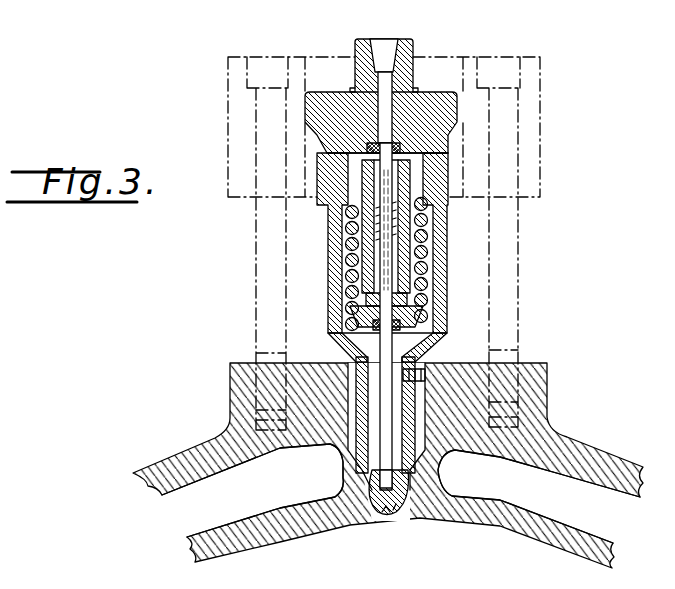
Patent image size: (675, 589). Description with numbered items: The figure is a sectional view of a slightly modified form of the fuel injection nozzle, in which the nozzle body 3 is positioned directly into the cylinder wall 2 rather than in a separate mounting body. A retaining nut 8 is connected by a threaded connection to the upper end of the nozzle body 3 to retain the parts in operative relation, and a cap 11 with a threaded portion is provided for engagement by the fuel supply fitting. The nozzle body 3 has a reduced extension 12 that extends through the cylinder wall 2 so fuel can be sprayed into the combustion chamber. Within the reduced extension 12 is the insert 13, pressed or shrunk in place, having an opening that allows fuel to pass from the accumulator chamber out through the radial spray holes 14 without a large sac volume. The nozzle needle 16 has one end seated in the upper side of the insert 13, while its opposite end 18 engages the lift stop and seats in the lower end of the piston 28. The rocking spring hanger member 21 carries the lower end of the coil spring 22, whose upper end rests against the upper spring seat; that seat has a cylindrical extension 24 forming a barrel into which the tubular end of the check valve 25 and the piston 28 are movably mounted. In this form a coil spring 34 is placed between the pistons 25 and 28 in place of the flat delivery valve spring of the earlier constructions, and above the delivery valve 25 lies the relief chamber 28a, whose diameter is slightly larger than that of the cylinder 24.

The cylinder wall 2 is at (566, 452).
The nozzle body 3 is at (425, 440).
The retaining nut 8 is at (447, 110).
The cap 11 is at (400, 82).
The reduced extension 12 is at (370, 513).
The insert 13 is at (377, 517).
The radial spray holes 14 is at (412, 528).
The nozzle needle 16 is at (343, 461).
The end of nozzle needle 18 is at (430, 340).
The rocking spring hanger member 21 is at (343, 340).
The coil spring 22 is at (350, 243).
The cylindrical extension 24 is at (368, 270).
The check valve 25 is at (405, 182).
The piston 28 is at (388, 277).
The relief chamber 28a is at (353, 92).
The coil spring 34 is at (441, 219).